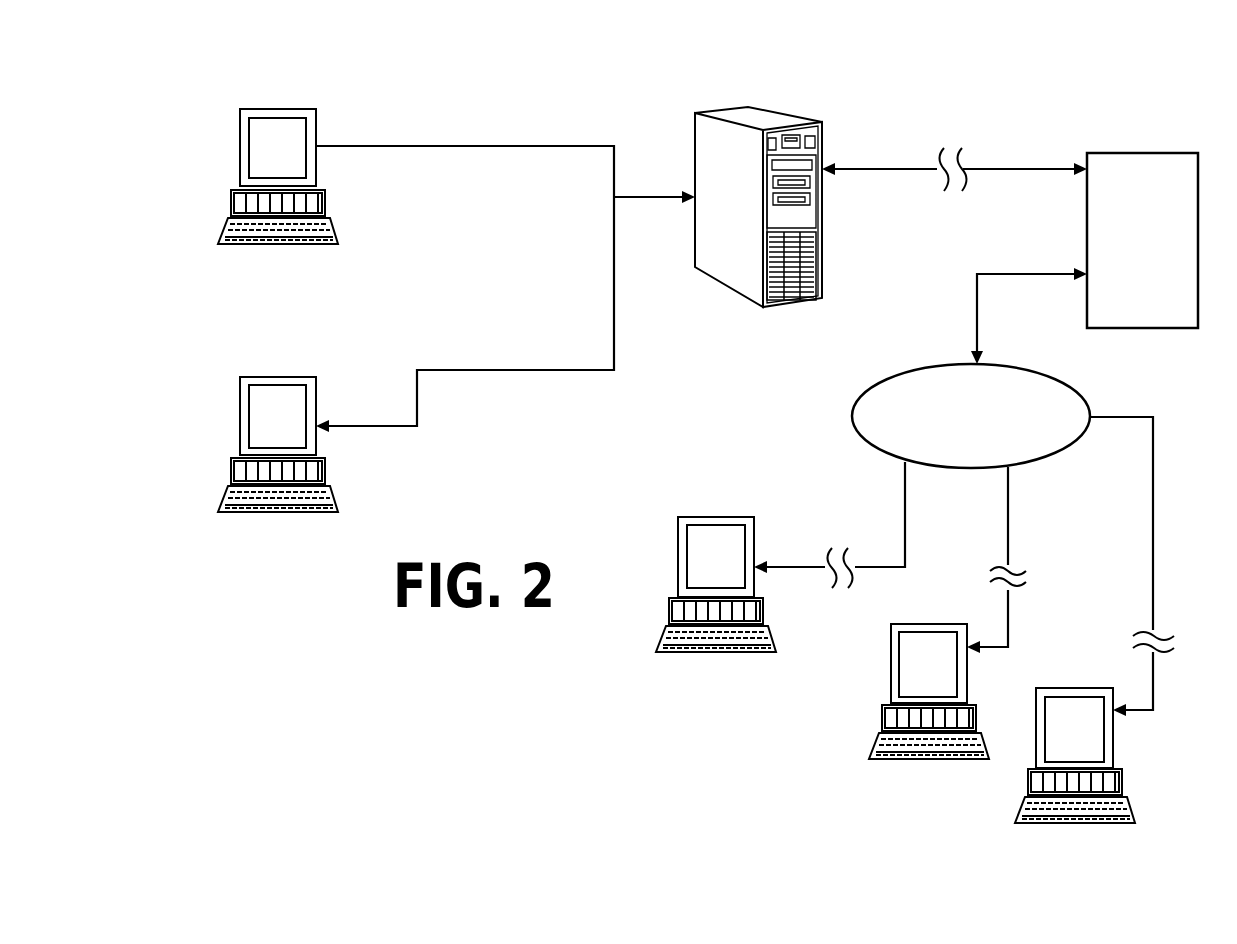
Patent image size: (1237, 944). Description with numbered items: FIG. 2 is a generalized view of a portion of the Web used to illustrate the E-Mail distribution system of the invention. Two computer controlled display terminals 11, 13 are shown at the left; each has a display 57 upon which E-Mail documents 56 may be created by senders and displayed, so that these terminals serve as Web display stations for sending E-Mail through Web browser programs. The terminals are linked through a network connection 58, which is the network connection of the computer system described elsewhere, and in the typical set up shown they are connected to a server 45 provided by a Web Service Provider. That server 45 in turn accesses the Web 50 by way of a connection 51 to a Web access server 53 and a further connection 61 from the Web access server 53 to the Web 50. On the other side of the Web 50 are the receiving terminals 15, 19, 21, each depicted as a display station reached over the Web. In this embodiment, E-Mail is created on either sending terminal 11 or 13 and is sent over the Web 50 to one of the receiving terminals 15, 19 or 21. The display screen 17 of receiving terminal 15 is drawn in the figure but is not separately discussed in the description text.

The computer controlled display terminal 11 is at (328, 225).
The computer controlled display terminal 13 is at (300, 409).
The receiving terminal 15 is at (678, 567).
The display screen 17 is at (710, 537).
The receiving terminal 19 is at (891, 675).
The receiving terminal 21 is at (1027, 780).
The server 45 is at (723, 150).
The Web 50 is at (900, 372).
The connection 51 is at (1020, 167).
The Web access server 53 is at (1153, 315).
The E-Mail document 56 is at (273, 128).
The display 57 is at (240, 157).
The connection 58 is at (614, 333).
The connection 61 is at (977, 312).